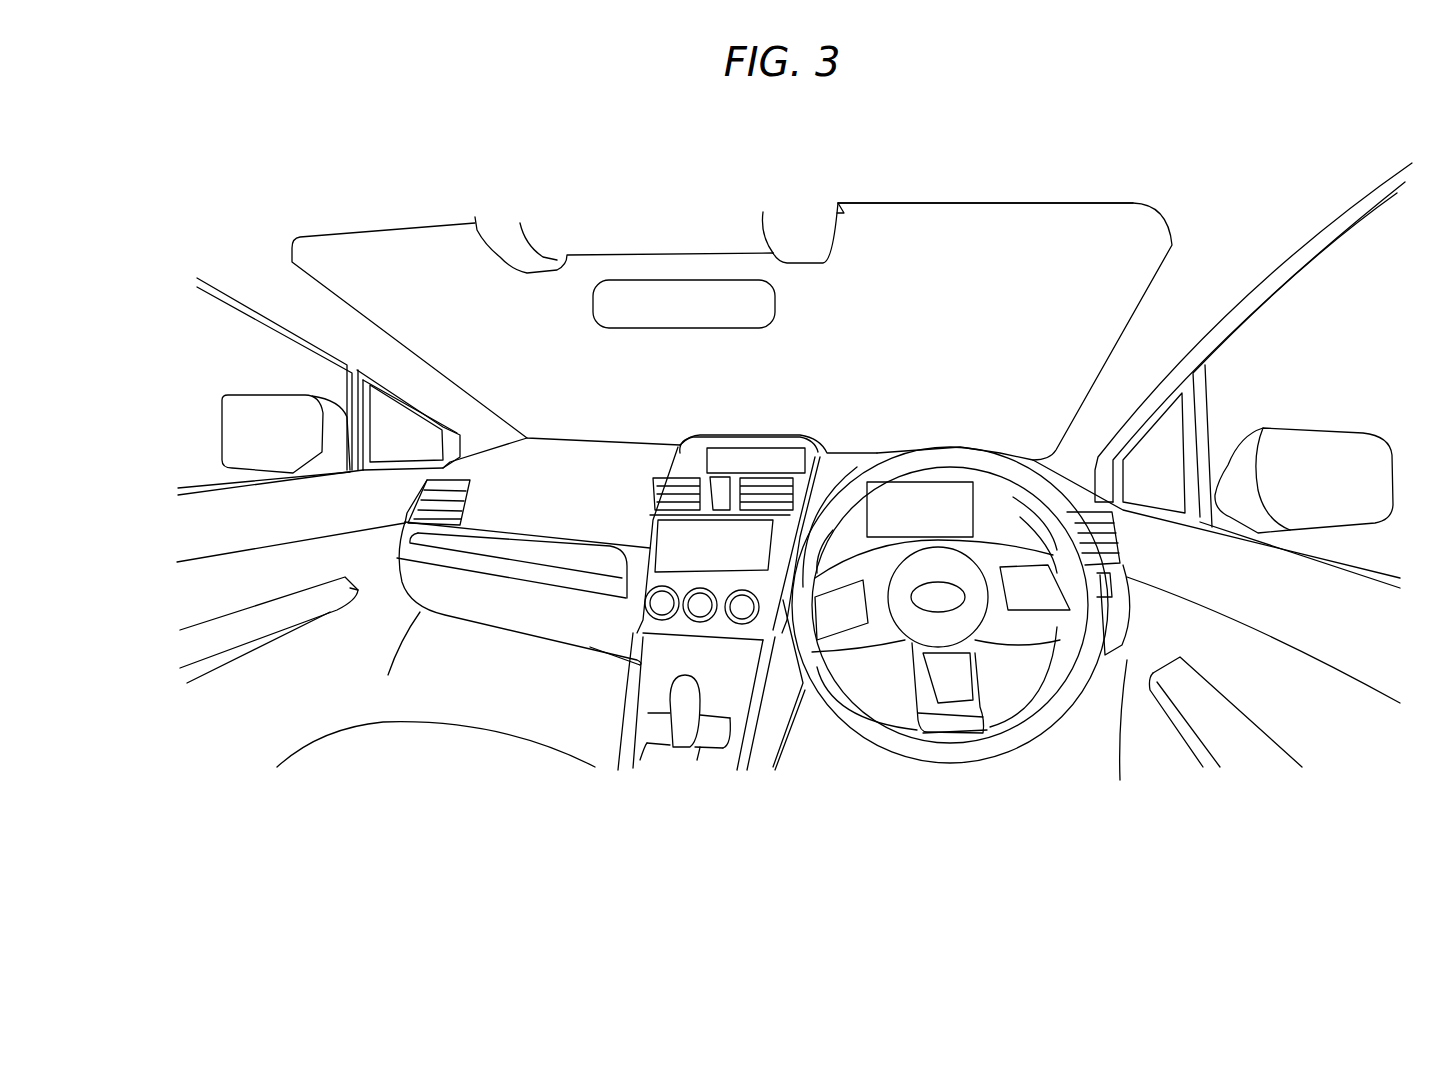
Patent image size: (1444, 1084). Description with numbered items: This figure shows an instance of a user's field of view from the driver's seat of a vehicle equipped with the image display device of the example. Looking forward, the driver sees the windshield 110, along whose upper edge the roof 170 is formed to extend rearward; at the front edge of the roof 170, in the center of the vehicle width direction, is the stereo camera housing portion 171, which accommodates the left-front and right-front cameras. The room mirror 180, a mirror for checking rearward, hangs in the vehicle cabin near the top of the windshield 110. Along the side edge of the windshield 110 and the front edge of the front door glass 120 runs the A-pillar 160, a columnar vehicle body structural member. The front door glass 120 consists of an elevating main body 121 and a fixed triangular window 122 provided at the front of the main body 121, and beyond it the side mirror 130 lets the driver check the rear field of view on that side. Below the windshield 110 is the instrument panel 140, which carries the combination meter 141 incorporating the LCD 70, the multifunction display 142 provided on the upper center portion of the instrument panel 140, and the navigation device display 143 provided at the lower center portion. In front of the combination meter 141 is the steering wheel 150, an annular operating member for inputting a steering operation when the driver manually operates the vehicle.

The LCD 70 is at (882, 537).
The windshield 110 is at (464, 288).
The front door glass 120 is at (285, 322).
The main body 121 is at (212, 320).
The fixed triangular window 122 is at (393, 437).
The side mirror 130 is at (267, 472).
The instrument panel 140 is at (518, 507).
The combination meter 141 is at (1008, 540).
The multifunction display 142 is at (717, 443).
The navigation device display 143 is at (692, 576).
The steering wheel 150 is at (1036, 733).
The A-pillar 160 is at (1158, 320).
The roof 170 is at (972, 186).
The stereo camera housing portion 171 is at (838, 221).
The room mirror 180 is at (738, 278).